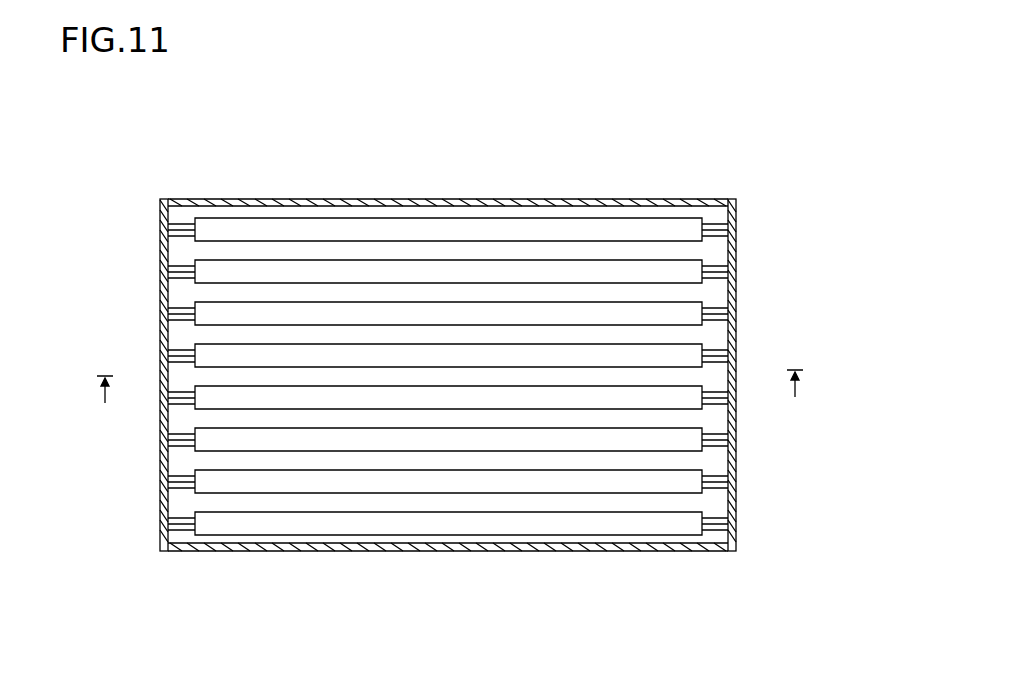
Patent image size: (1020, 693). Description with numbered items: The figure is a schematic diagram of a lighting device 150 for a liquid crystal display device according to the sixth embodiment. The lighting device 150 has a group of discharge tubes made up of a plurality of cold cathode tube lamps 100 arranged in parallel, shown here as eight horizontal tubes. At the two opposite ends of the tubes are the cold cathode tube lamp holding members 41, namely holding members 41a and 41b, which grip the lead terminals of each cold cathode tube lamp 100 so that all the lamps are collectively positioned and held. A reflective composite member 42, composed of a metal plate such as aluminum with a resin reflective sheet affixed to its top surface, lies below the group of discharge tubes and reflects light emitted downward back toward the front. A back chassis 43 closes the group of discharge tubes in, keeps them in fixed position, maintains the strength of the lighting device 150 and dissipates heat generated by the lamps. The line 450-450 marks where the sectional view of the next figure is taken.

The lighting device 150 is at (795, 163).
The cold cathode tube lamp holding members 41 is at (447, 375).
The cold cathode tube lamp holding member 41a is at (162, 308).
The cold cathode tube lamp holding member 41b is at (737, 300).
The back chassis 43 is at (637, 202).
The cold cathode tube lamp 100 is at (397, 355).
The reflective composite member 42 is at (713, 535).
The section line 450- 450 is at (450, 401).